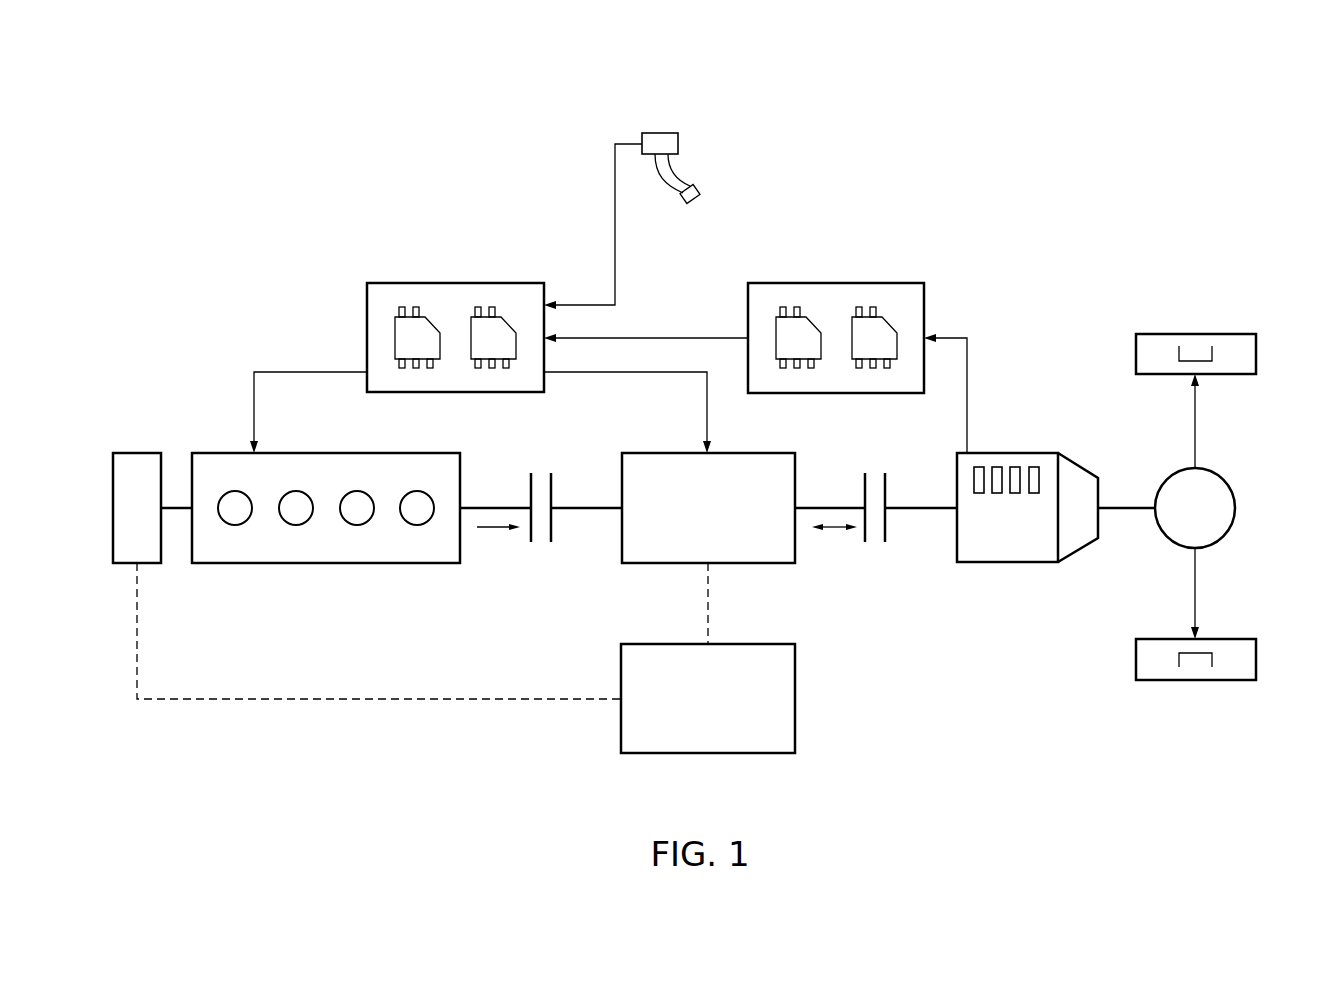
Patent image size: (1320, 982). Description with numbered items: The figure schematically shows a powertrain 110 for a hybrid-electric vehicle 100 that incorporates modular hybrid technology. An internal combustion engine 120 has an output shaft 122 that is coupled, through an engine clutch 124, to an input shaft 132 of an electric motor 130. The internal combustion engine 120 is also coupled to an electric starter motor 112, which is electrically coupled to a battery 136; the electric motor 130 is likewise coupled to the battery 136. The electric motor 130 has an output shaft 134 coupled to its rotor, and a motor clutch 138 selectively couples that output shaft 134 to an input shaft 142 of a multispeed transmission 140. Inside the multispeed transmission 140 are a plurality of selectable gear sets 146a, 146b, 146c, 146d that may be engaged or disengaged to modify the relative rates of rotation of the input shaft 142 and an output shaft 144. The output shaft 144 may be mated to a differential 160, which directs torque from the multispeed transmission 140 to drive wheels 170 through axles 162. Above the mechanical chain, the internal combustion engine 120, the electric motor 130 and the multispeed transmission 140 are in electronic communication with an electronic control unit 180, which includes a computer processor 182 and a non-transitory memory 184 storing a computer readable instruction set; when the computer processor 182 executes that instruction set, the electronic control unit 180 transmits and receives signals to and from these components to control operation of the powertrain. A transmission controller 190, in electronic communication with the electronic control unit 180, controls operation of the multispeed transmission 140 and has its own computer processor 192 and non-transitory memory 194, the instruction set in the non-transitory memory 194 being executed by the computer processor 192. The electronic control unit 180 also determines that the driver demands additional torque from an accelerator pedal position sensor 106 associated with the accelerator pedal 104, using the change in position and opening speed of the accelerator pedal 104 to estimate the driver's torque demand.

The hybrid-electric vehicle 100 is at (972, 174).
The accelerator pedal 104 is at (711, 142).
The accelerator pedal position sensor 106 is at (660, 133).
The powertrain 110 is at (398, 751).
The electric starter motor 112 is at (136, 453).
The internal combustion engine 120 is at (222, 435).
The output shaft 122 is at (490, 508).
The engine clutch 124 is at (551, 478).
The electric motor 130 is at (815, 578).
The input shaft 132 is at (600, 510).
The output shaft 134 is at (825, 508).
The battery 136 is at (795, 697).
The motor clutch 138 is at (885, 478).
The multispeed transmission 140 is at (1009, 585).
The input shaft 142 is at (935, 510).
The output shaft 144 is at (1137, 510).
The selectable gear set 146a is at (979, 467).
The selectable gear set 146b is at (997, 493).
The selectable gear set 146c is at (1033, 467).
The selectable gear set 146d is at (1040, 480).
The differential 160 is at (1235, 508).
The axles 162 is at (1195, 428).
The drive wheels 170 is at (1200, 334).
The electronic control unit 180 is at (397, 265).
The computer processor 182 is at (410, 307).
The non-transitory memory 184 is at (486, 307).
The transmission controller 190 is at (777, 265).
The computer processor 192 is at (791, 307).
The non-transitory memory 194 is at (867, 307).